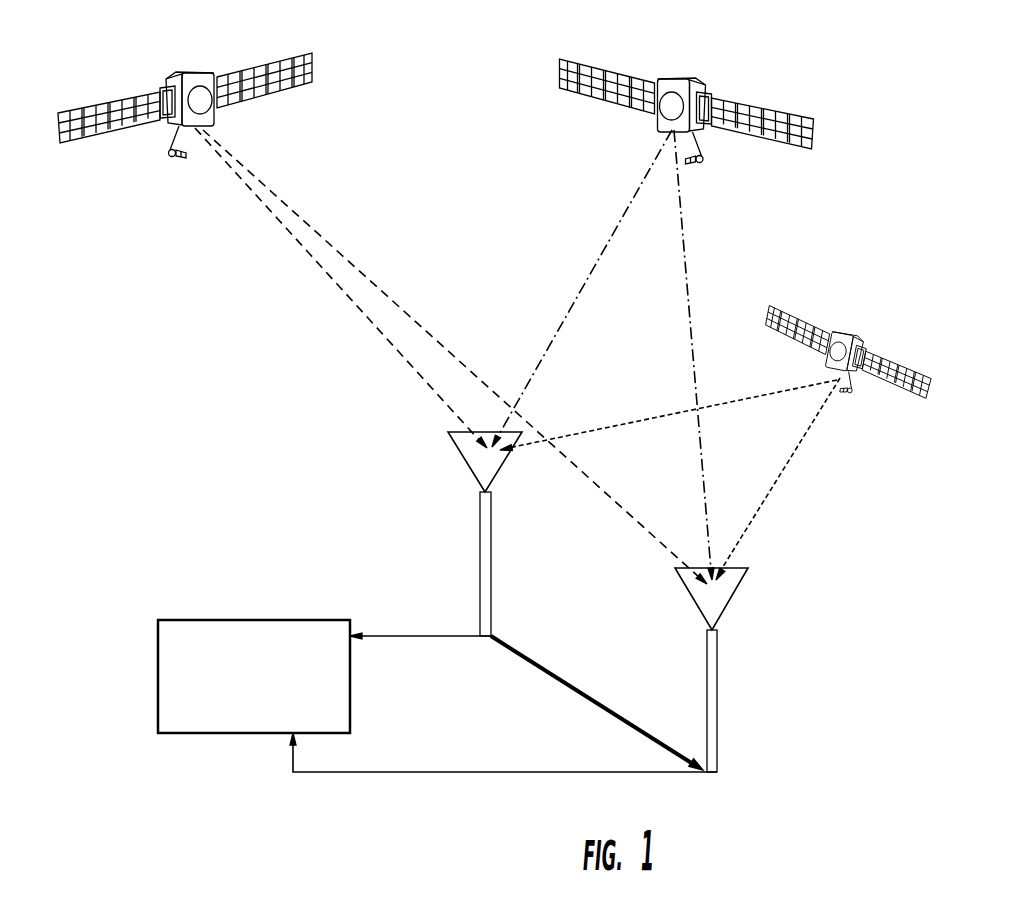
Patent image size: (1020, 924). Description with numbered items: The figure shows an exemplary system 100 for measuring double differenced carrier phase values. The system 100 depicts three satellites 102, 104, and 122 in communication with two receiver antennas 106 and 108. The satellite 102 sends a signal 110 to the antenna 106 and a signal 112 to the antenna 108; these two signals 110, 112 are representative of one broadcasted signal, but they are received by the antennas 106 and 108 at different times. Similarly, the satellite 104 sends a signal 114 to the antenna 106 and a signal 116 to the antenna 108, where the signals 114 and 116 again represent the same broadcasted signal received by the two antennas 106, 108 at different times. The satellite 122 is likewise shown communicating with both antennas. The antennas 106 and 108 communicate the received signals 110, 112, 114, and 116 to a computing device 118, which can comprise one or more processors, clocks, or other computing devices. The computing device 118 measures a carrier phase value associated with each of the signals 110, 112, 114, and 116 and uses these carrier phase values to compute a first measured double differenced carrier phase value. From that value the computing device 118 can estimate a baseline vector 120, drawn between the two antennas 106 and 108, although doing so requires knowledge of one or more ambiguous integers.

The system 100 is at (192, 514).
The satellite 102 is at (187, 72).
The satellite 104 is at (693, 80).
The receiver antenna 106 is at (480, 496).
The receiver antenna 108 is at (712, 632).
The signal 110 is at (372, 327).
The signal 112 is at (402, 315).
The signal 114 is at (595, 262).
The signal 116 is at (687, 270).
The computing device 118 is at (228, 620).
The baseline vector 120 is at (553, 678).
The satellite 122 is at (851, 333).